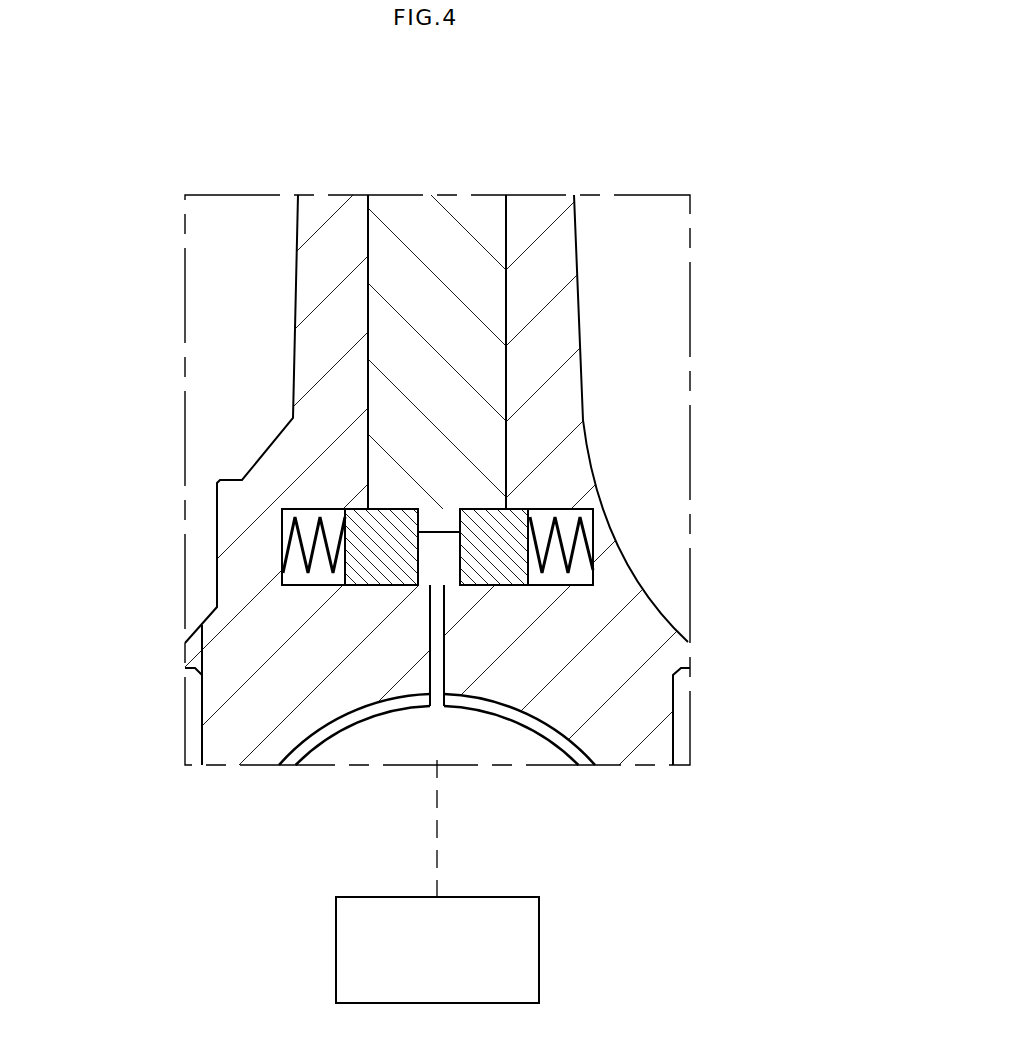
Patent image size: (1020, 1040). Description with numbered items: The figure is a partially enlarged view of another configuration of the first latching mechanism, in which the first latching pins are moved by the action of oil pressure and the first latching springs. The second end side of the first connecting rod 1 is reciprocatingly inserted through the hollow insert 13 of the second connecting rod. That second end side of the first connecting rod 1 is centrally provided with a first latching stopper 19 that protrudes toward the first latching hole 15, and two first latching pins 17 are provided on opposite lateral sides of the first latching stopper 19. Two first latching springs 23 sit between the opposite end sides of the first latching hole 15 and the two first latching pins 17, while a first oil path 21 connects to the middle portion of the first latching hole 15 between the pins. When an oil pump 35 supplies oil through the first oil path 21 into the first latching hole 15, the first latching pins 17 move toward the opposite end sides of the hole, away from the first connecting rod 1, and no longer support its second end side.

The first connecting rod 1 is at (437, 292).
The hollow insert 13 is at (557, 328).
The first latching hole 15 is at (447, 588).
The first latching pin 17 is at (370, 565).
The first latching stopper 19 is at (436, 508).
The first oil path 21 is at (427, 663).
The first latching spring 23 is at (283, 523).
The oil pump 35 is at (539, 950).